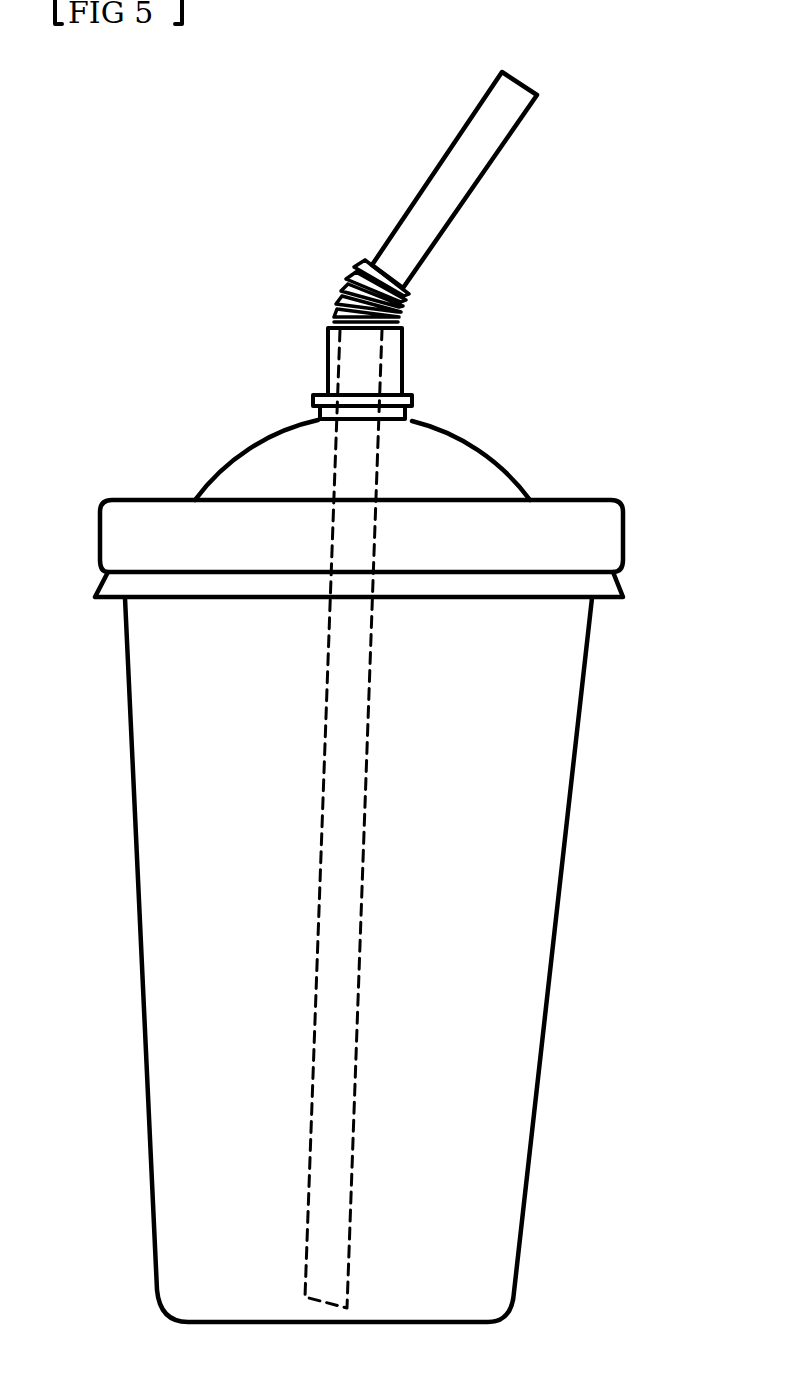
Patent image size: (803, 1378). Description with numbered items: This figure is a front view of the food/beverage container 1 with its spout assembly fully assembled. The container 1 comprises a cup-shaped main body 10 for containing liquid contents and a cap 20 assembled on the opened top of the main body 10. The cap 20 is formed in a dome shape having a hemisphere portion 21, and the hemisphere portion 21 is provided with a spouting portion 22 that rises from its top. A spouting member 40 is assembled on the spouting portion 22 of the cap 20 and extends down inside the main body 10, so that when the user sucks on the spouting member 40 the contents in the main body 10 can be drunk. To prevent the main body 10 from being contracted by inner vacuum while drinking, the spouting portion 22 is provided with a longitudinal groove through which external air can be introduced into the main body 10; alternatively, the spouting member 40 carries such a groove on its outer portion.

The food/beverage container 1 is at (596, 463).
The cup-shaped body 10 is at (178, 1008).
The cap 20 is at (177, 499).
The hemisphere portion 21 is at (452, 447).
The spouting portion 22 is at (327, 360).
The spouting member 40 is at (420, 212).